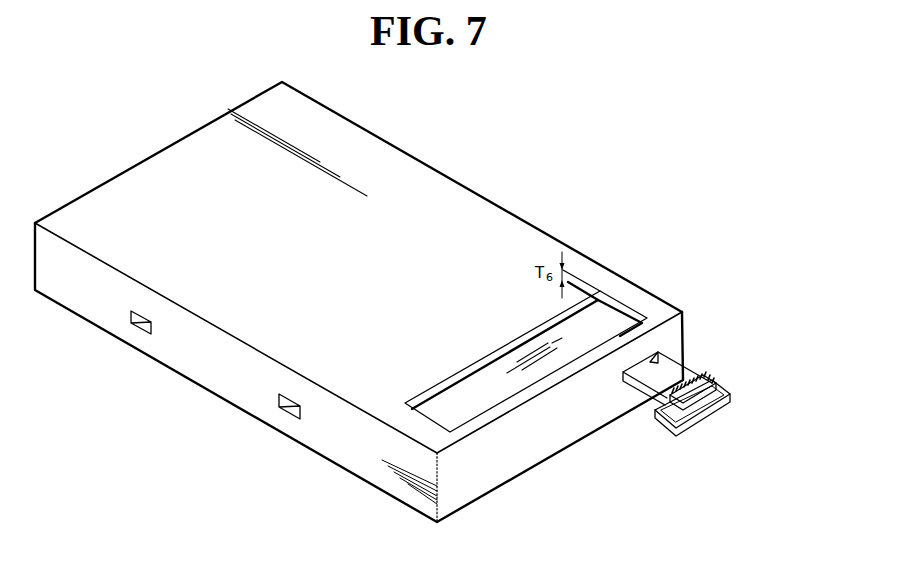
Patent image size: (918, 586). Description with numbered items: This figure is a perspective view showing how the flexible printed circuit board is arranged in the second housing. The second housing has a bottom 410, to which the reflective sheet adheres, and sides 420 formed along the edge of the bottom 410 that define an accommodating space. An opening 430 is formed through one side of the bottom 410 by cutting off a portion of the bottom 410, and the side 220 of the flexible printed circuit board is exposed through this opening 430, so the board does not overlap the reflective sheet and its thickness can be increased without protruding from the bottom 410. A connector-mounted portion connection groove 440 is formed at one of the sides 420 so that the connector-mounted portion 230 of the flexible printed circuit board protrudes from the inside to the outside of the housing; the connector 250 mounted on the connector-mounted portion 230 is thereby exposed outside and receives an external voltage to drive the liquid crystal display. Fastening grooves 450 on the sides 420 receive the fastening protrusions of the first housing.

The bottom 410 is at (440, 197).
The sides 420 is at (498, 465).
The opening 430 is at (506, 349).
The side of the flexible printed circuit board 220 is at (597, 325).
The connector-mounted portion connection groove 440 is at (652, 358).
The connector-mounted portion 230 is at (727, 385).
The connector 250 is at (703, 405).
The fastening grooves 450 is at (288, 413).